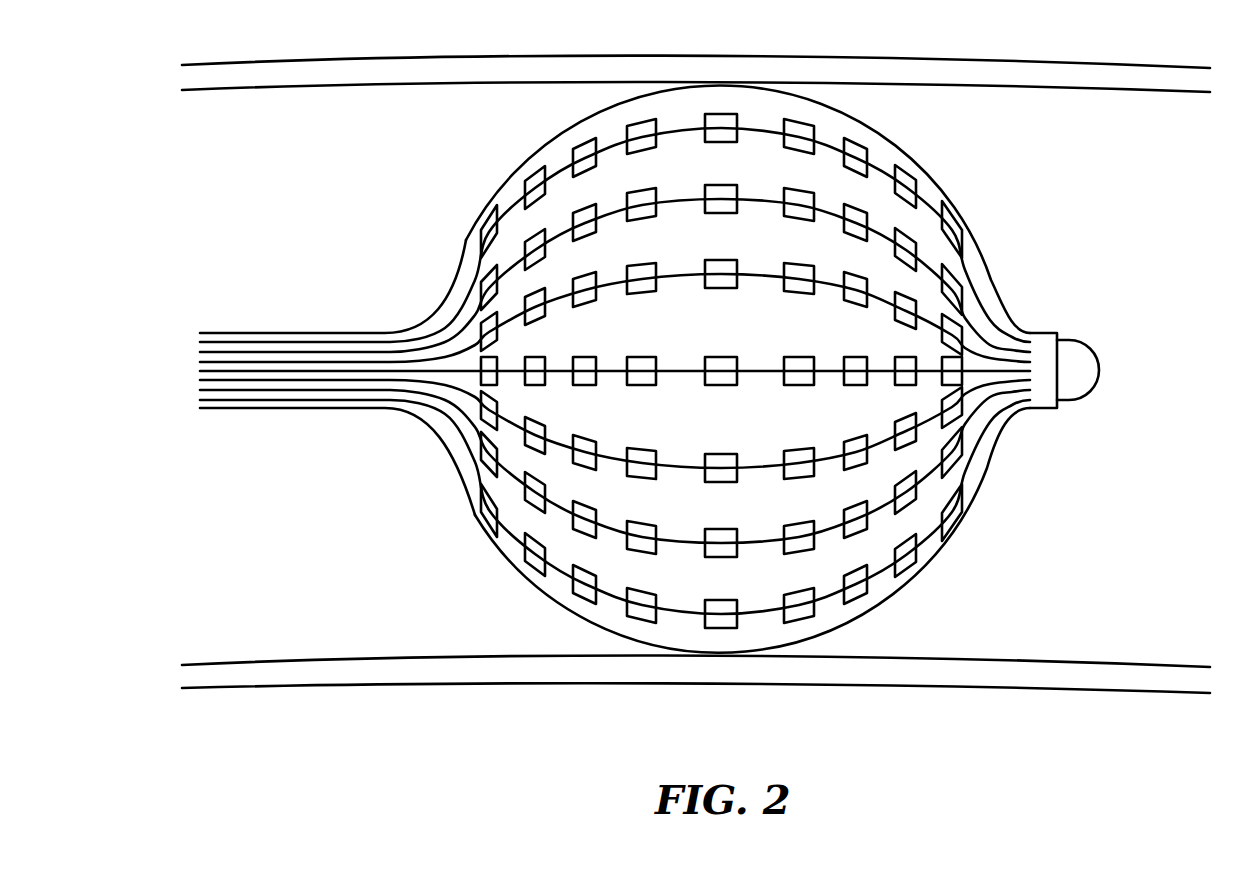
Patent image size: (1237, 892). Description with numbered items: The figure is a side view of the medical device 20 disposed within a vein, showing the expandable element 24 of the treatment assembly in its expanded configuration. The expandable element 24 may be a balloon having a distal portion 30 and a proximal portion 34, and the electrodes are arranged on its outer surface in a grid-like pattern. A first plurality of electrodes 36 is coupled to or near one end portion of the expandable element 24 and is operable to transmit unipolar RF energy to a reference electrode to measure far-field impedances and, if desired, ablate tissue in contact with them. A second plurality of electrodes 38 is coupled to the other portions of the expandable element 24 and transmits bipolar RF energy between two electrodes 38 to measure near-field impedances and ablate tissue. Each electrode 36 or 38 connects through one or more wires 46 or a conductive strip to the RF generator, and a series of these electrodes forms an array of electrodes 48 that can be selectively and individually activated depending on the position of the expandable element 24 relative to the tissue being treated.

The catheter device 20 is at (1108, 450).
The expandable element 24 is at (1003, 438).
The distal portion 30 is at (427, 425).
The proximal portion 34 is at (975, 235).
The first plurality of electrodes 36 is at (958, 286).
The second plurality of electrodes 38 is at (718, 386).
The wires 46 is at (880, 172).
The array of electrodes 48 is at (557, 172).